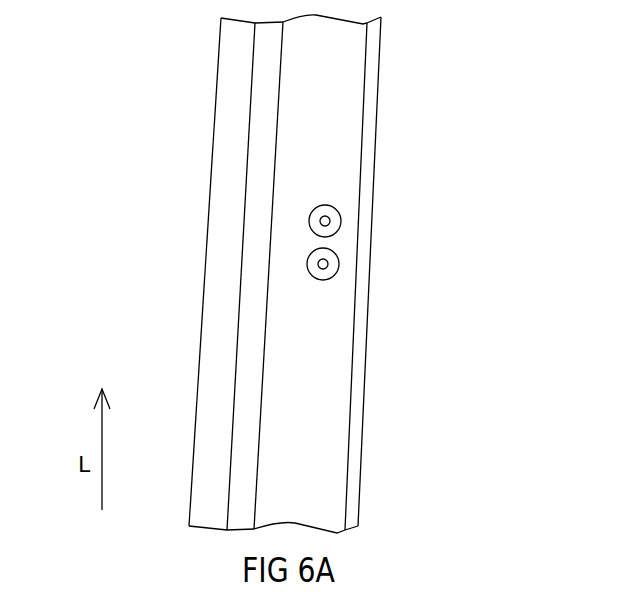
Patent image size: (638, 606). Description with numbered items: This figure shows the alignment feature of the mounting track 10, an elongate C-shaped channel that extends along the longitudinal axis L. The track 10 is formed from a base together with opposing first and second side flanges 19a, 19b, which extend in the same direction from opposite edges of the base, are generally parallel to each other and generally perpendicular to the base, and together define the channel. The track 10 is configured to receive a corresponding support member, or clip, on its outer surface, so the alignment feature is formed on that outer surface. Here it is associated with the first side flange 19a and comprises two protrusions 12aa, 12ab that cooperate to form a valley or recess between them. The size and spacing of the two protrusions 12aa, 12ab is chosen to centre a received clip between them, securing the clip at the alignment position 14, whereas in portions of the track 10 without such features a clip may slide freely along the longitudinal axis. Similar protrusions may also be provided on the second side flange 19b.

The mounting track 10 is at (436, 124).
The alignment position 14 is at (390, 242).
The first side flange 19a is at (357, 484).
The second side flange 19b is at (170, 354).
The first protrusion 12aa is at (325, 204).
The second protrusion 12ab is at (318, 279).